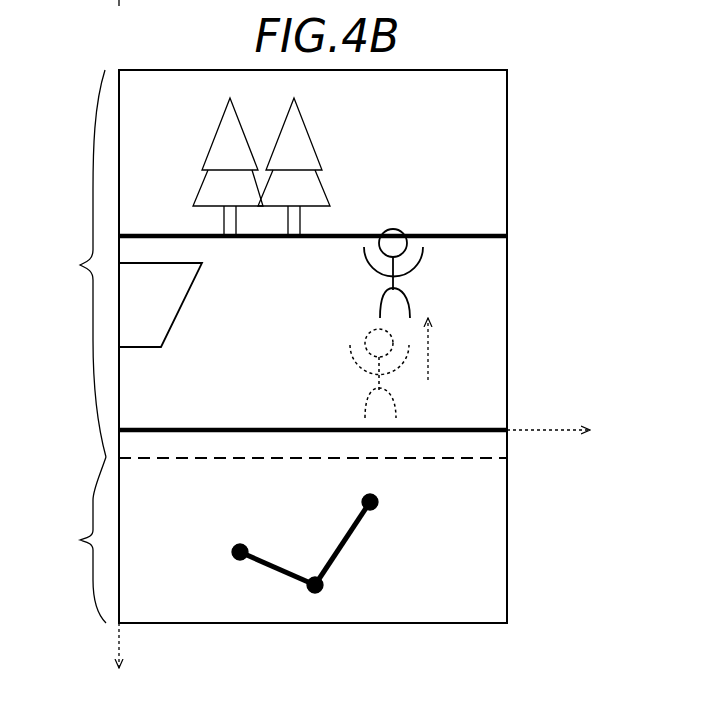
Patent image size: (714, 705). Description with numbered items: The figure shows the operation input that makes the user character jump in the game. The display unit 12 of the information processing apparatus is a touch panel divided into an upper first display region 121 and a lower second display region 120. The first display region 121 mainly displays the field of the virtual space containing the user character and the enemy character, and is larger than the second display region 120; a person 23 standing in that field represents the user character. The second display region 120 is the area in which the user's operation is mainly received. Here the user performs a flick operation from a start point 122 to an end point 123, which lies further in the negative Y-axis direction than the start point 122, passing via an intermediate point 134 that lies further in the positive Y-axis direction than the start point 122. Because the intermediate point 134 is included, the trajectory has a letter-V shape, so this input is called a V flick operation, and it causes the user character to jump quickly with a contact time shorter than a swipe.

The display unit 12 is at (537, 142).
The person (user) 23 is at (395, 231).
The first display region 121 is at (71, 263).
The second display region 120 is at (72, 540).
The start point 122 is at (232, 552).
The end point 123 is at (378, 502).
The intermediate point 134 is at (323, 586).